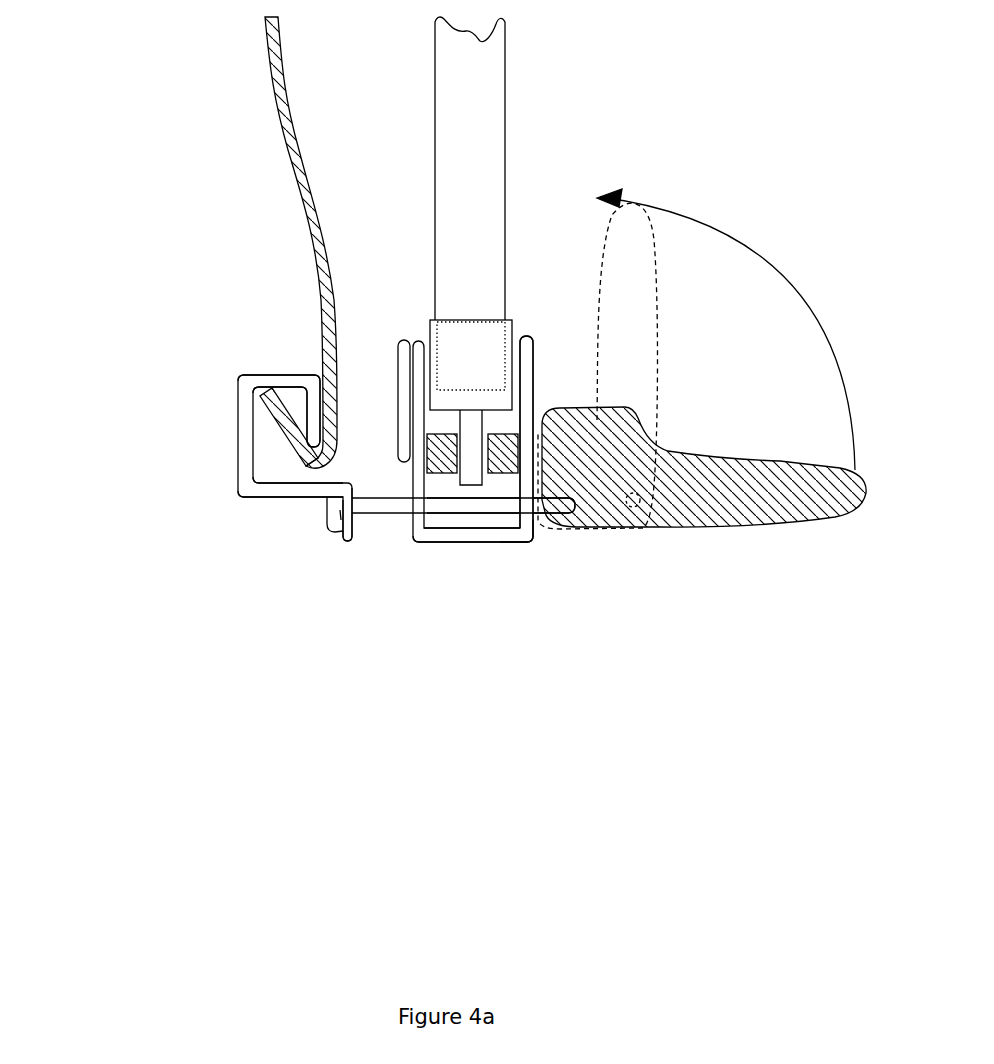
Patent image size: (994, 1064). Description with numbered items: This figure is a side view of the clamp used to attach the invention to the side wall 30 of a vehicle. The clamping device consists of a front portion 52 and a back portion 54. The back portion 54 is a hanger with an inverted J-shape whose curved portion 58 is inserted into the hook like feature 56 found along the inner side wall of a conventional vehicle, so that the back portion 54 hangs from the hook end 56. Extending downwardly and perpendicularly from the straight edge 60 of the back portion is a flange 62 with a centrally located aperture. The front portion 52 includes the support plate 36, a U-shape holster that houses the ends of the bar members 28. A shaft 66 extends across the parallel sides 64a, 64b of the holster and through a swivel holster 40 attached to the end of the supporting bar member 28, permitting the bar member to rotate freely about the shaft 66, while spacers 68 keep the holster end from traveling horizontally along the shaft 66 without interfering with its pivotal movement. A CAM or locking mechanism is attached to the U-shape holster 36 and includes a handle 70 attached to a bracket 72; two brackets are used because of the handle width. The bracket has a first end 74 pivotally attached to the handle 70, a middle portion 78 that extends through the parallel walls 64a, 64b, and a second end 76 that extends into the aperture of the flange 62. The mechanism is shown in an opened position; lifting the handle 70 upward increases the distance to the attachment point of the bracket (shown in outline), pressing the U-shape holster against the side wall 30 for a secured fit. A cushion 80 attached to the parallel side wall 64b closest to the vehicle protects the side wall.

The bar member 28 is at (487, 105).
The side wall 30 is at (298, 200).
The support plate 36 is at (532, 540).
The swivel holster 40 is at (492, 332).
The front portion 52 is at (558, 551).
The back portion 54 is at (231, 485).
The hook like feature 56 is at (290, 437).
The curved portion 58 is at (270, 375).
The straight edge 60 is at (258, 497).
The flange 62 is at (345, 537).
The parallel side 64a is at (525, 350).
The parallel side 64b is at (415, 528).
The shaft 66 is at (486, 450).
The spacers 68 is at (497, 470).
The handle 70 is at (732, 523).
The bracket 72 is at (507, 512).
The first end 74 is at (605, 530).
The second end 76 is at (326, 527).
The middle portion 78 is at (475, 508).
The cushion 80 is at (397, 340).